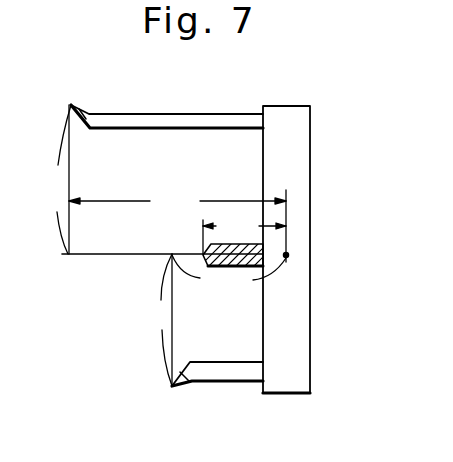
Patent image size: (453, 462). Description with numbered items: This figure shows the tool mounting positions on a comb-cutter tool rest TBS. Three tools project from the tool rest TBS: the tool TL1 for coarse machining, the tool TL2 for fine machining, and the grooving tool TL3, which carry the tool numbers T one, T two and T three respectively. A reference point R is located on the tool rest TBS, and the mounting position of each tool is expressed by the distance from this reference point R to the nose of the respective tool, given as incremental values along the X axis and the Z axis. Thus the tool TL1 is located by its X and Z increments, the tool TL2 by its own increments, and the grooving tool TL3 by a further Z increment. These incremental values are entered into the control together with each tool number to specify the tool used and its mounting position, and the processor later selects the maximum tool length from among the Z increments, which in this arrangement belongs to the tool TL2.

The tool for coarse machining TL1 is at (222, 372).
The tool for fine machining TL2 is at (178, 114).
The grooving tool TL3 is at (248, 266).
The tool rest TBS is at (303, 192).
The reference point R is at (292, 245).